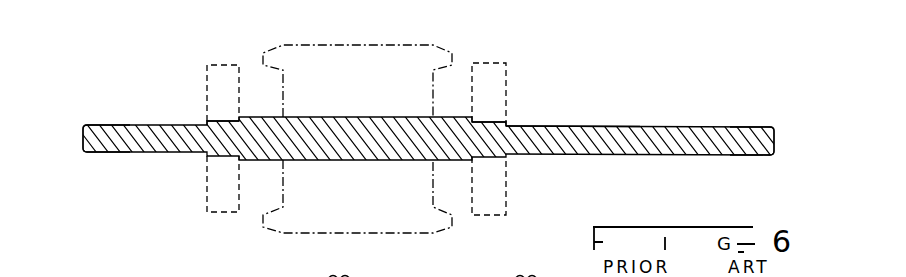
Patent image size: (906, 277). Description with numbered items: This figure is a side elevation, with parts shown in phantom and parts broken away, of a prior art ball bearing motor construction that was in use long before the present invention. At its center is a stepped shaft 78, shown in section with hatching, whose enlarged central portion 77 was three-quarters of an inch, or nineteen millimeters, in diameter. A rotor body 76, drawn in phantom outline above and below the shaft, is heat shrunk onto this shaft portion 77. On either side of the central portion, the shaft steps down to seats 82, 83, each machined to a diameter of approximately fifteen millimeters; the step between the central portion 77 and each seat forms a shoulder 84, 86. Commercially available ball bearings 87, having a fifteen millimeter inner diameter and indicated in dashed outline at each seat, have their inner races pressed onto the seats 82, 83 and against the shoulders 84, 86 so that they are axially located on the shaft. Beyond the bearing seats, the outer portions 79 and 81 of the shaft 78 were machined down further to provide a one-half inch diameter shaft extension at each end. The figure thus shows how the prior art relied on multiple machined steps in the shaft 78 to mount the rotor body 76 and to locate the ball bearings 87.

The rotor body 76 is at (350, 44).
The portion of stepped shaft 77 is at (445, 117).
The stepped shaft 78 is at (742, 128).
The portion of shaft 79 is at (126, 125).
The portion of shaft 81 is at (565, 126).
The seat 82 is at (493, 118).
The seat 83 is at (218, 120).
The shoulder 84 is at (473, 118).
The shoulder 86 is at (238, 118).
The ball bearing 87 is at (207, 203).